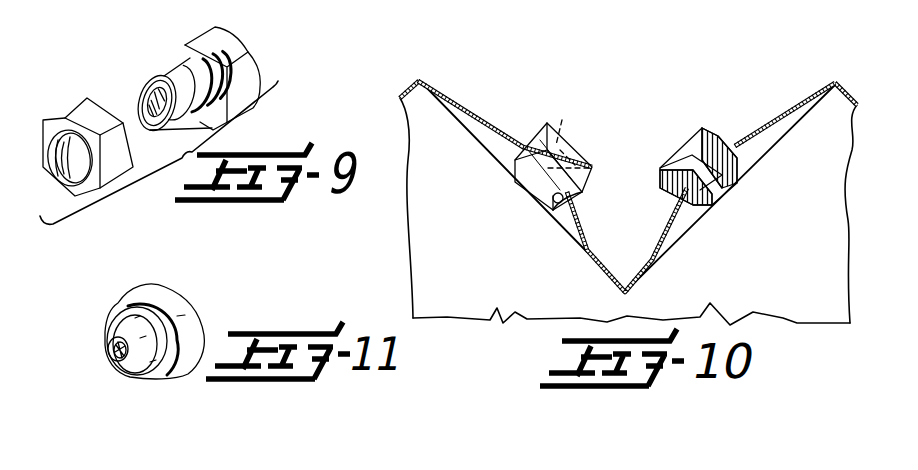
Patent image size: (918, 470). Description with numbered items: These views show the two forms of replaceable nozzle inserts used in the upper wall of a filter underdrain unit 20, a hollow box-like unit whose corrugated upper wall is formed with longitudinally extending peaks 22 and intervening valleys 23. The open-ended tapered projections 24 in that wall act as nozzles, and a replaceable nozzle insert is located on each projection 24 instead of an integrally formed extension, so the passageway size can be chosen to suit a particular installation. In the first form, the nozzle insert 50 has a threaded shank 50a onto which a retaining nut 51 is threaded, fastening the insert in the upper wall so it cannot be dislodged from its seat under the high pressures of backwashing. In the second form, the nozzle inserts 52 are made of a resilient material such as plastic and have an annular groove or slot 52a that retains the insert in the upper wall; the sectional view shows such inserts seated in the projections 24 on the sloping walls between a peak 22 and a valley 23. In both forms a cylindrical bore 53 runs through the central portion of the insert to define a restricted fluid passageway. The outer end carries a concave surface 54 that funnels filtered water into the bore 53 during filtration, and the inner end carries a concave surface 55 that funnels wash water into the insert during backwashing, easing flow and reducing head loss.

In FIG. 10, the underdrain unit 20 is at (755, 62).
In FIG. 10, the peaks 22 is at (421, 78).
In FIG. 10, the valleys 23 is at (629, 288).
In FIG. 10, the tapered projections 24 is at (492, 138).
In FIG. 9, the nozzle insert 50 is at (195, 148).
In FIG. 9, the threaded shank 50a is at (172, 65).
In FIG. 9, the retaining nut 51 is at (93, 110).
In FIG. 11, the nozzle inserts 52 is at (163, 290).
In FIG. 10, the nozzle inserts 52 is at (592, 170).
In FIG. 11, the annular groove 52a is at (167, 376).
In FIG. 10, the annular groove 52a is at (575, 198).
In FIG. 11, the cylindrical bore 53 is at (108, 350).
In FIG. 10, the cylindrical bore 53 is at (567, 137).
In FIG. 10, the concave surface 54 is at (572, 100).
In FIG. 9, the concave surface 55 is at (146, 103).
In FIG. 11, the concave surface 55 is at (118, 355).
In FIG. 10, the concave surface 55 is at (540, 195).